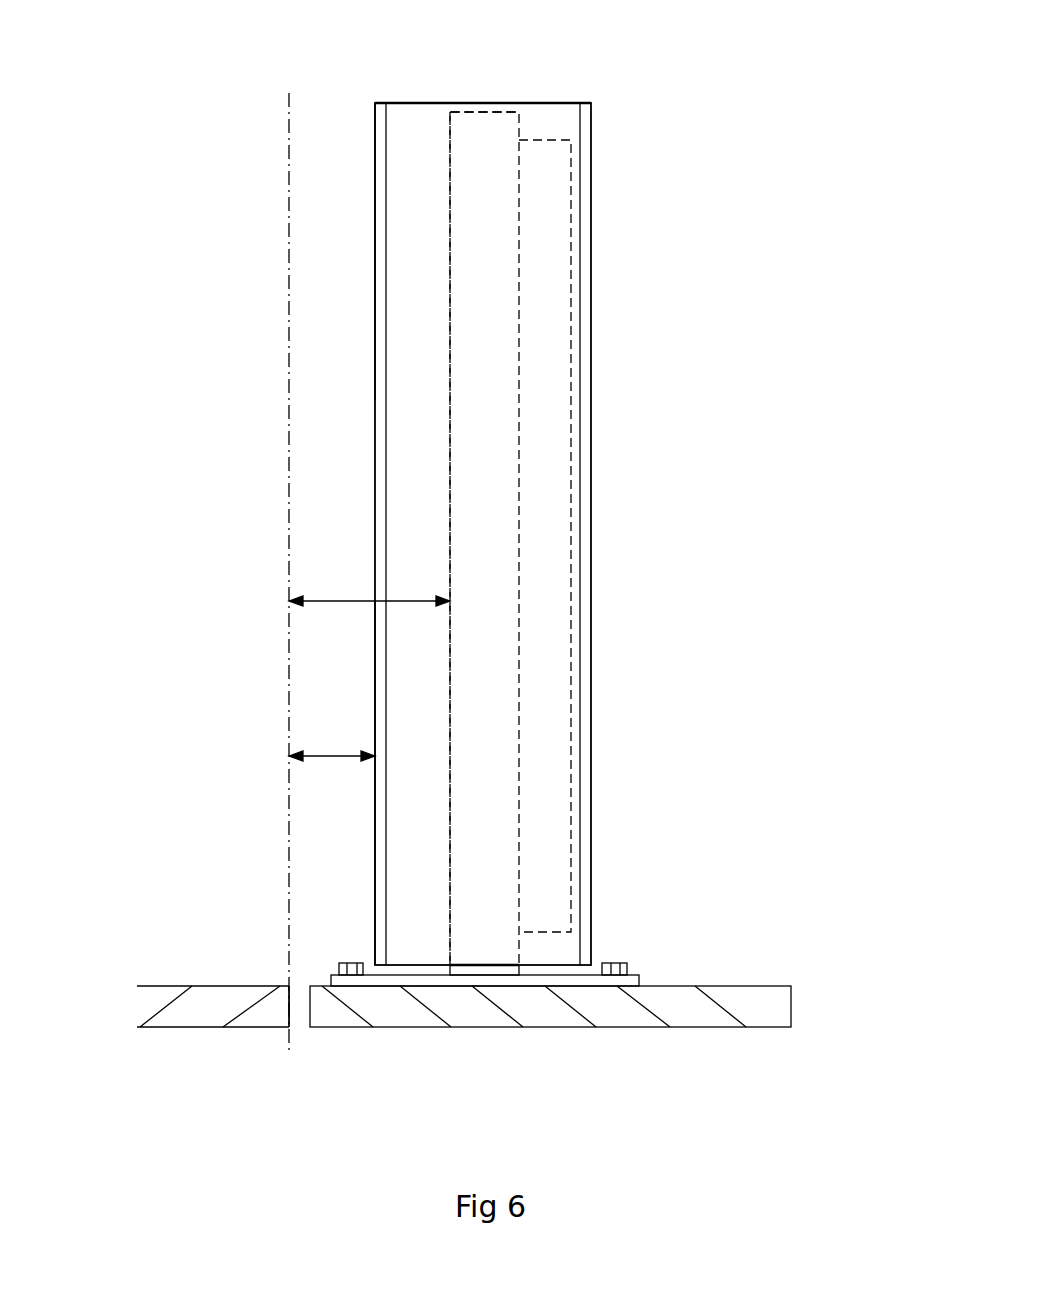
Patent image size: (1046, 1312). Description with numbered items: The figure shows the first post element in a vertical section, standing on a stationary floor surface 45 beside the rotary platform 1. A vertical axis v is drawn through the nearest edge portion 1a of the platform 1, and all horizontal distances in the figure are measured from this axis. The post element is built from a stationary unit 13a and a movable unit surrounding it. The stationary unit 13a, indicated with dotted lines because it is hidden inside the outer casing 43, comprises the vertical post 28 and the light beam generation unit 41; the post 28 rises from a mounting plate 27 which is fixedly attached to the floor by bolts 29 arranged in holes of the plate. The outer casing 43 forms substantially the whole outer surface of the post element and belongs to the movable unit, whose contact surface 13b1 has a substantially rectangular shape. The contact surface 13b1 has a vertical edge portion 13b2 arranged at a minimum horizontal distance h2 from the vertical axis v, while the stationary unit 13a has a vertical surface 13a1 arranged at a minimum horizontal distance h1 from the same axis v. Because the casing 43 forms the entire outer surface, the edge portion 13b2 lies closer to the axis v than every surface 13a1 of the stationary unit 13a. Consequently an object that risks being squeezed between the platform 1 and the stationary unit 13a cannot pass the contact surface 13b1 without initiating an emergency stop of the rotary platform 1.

The rotary platform 1 is at (204, 1007).
The outer edge portion 1a is at (289, 1007).
The stationary unit 13a is at (493, 443).
The vertical surface 13a1 is at (450, 500).
The contact surface 13b1 is at (428, 190).
The vertical edge portion 13b2 is at (374, 715).
The mounting plate 27 is at (493, 978).
The vertical post 28 is at (487, 160).
The bolts 29 is at (615, 963).
The light beam generation unit 41 is at (547, 286).
The outer casing 43 is at (593, 584).
The stationary floor surface 45 is at (752, 986).
The vertical axis v is at (287, 363).
The minimum horizontal distance h1 is at (369, 583).
The minimum horizontal distance h2 is at (332, 740).